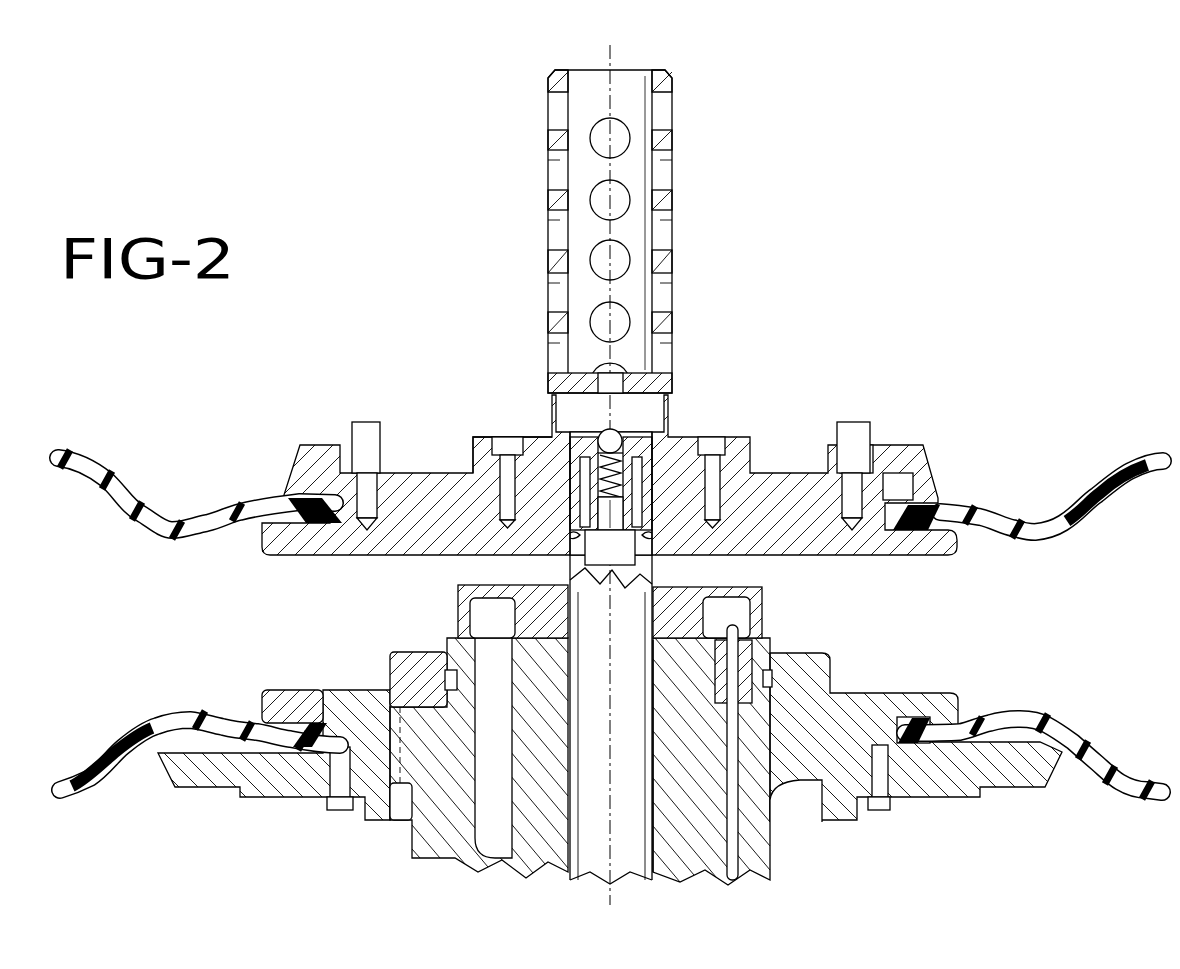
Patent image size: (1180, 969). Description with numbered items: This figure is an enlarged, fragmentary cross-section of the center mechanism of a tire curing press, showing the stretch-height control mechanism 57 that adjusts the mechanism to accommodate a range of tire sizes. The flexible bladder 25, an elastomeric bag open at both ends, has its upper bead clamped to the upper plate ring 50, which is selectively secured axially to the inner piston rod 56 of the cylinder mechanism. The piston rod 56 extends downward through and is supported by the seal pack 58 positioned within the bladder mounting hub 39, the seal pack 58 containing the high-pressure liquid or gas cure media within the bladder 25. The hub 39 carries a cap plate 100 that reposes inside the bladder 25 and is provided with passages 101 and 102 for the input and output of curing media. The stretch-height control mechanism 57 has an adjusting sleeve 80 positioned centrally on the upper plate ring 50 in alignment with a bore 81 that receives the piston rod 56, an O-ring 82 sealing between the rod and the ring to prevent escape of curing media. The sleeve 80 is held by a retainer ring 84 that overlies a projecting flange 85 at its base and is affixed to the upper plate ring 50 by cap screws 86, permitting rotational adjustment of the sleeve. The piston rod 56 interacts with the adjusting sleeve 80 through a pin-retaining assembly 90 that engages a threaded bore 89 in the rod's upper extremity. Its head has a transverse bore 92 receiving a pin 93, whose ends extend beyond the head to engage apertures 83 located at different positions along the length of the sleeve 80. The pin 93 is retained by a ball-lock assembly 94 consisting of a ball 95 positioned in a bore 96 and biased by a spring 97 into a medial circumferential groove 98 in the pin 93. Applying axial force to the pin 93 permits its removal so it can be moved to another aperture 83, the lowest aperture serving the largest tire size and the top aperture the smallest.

The bladder 25 is at (123, 498).
The bladder mounting hub 39 is at (693, 860).
The upper plate ring 50 is at (333, 556).
The piston rod 56 is at (600, 712).
The stretch-height control mechanism 57 is at (684, 98).
The seal pack 58 is at (665, 690).
The adjusting sleeve 80 is at (557, 150).
The bore 81 is at (655, 566).
The O-ring 82 is at (700, 535).
The apertures 83 is at (617, 143).
The retainer ring 84 is at (482, 456).
The projecting flange 85 is at (700, 523).
The cap screws 86 is at (512, 447).
The threaded bore 89 is at (600, 540).
The pin-retaining assembly 90 is at (583, 370).
The transverse bore 92 is at (590, 403).
The pin 93 is at (655, 420).
The ball-lock assembly 94 is at (628, 466).
The ball 95 is at (568, 435).
The bore 96 is at (607, 577).
The spring 97 is at (620, 470).
The medial circumferential groove 98 is at (640, 372).
The cap plate 100 is at (465, 592).
The passage 101 is at (505, 623).
The passage 102 is at (713, 620).